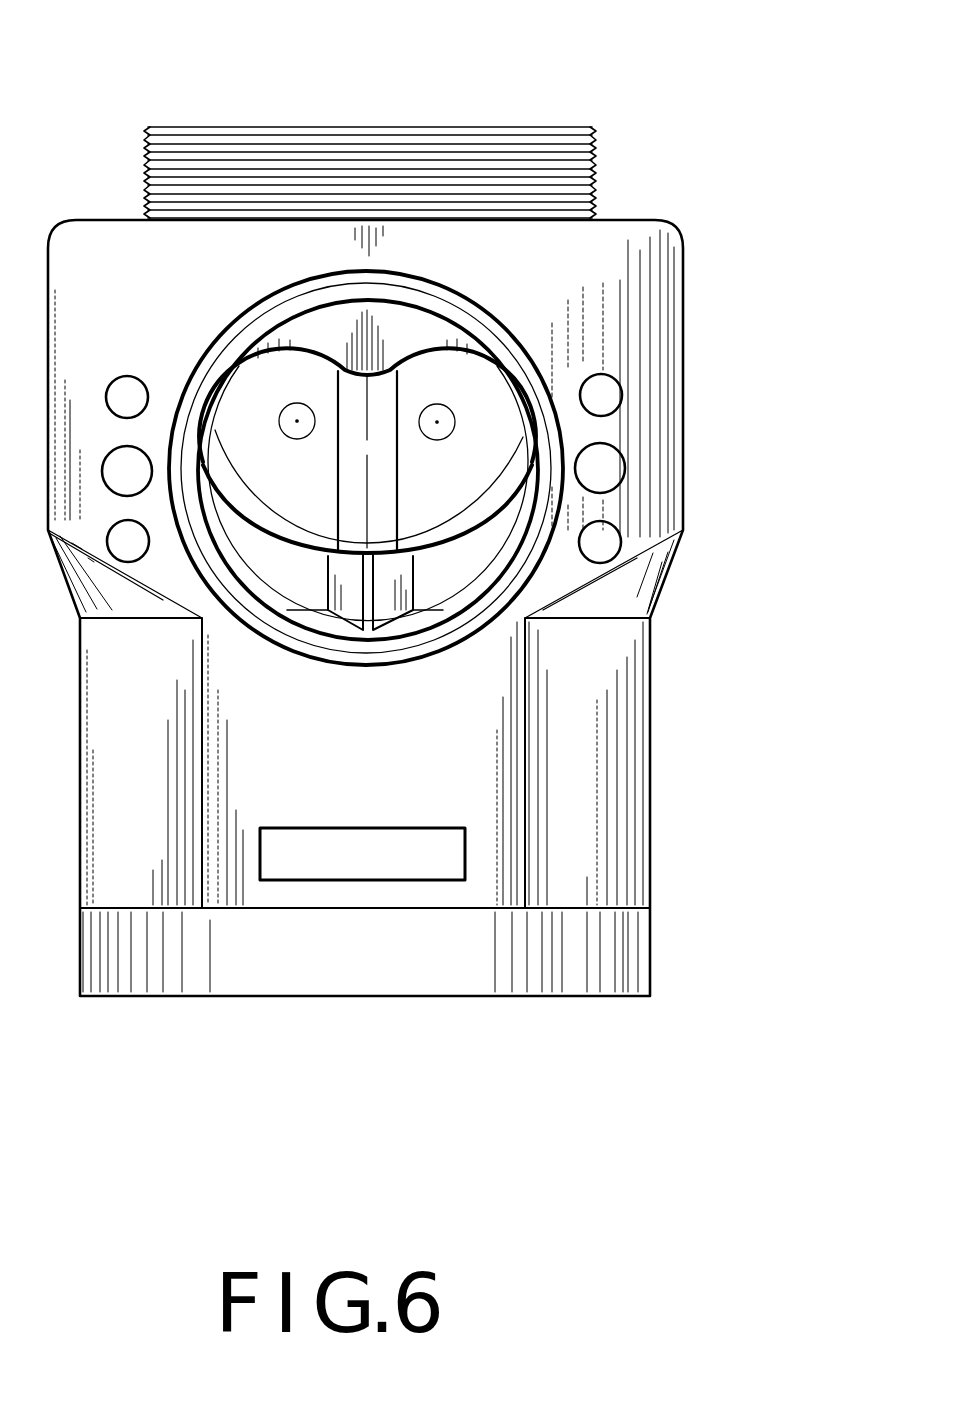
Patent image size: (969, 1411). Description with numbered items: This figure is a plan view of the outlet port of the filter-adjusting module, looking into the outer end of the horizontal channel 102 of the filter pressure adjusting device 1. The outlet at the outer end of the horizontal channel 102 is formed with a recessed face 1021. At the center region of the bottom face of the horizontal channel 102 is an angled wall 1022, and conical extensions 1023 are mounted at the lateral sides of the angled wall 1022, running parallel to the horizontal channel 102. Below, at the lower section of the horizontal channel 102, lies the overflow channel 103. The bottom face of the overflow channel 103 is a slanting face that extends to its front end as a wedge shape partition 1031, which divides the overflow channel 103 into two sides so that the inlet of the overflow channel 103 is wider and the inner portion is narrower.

The filter pressure adjusting device 1 is at (700, 313).
The horizontal channel 102 is at (490, 445).
The recessed face 1021 is at (322, 358).
The angled wall 1022 is at (388, 400).
The conical extensions 1023 is at (288, 405).
The overflow channel 103 is at (467, 562).
The wedge shape partition 1031 is at (395, 617).